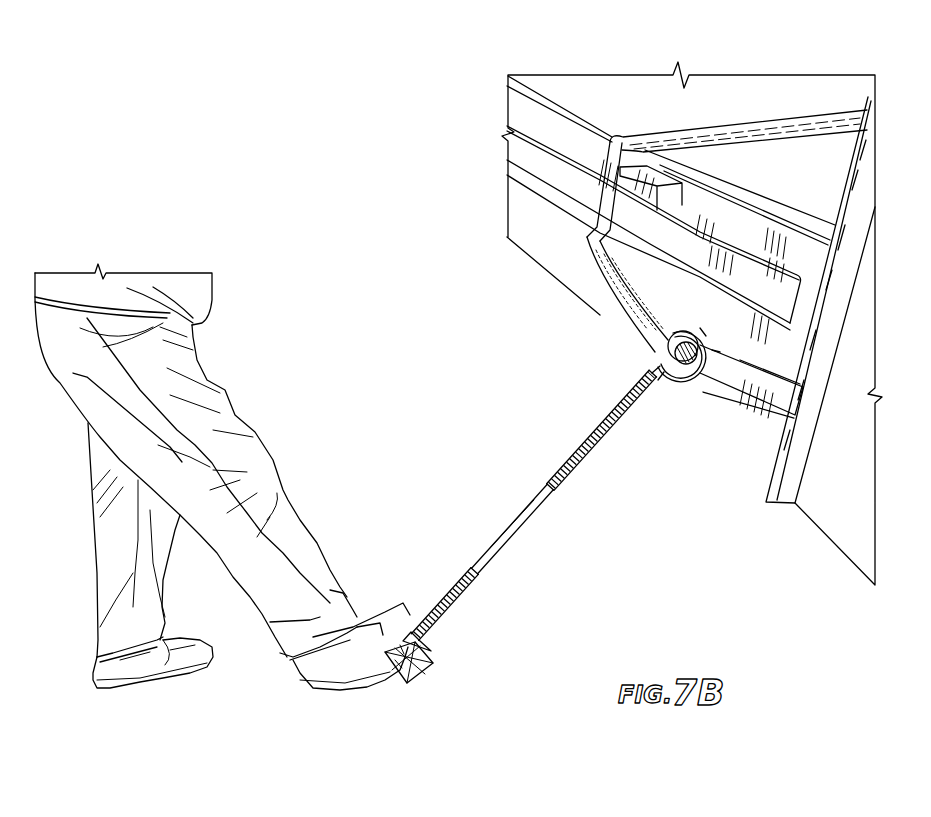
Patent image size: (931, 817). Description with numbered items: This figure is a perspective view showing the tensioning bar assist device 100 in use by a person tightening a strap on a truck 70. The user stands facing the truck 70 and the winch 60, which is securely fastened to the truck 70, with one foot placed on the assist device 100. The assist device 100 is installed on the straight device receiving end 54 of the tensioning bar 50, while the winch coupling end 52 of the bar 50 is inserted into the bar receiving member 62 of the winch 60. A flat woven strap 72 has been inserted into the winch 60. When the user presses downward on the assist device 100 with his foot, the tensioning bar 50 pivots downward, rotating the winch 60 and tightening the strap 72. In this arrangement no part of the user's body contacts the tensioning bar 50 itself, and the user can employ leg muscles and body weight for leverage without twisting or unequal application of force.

The truck 70 is at (620, 88).
The flat woven strap 72 is at (591, 279).
The bar receiving member 62 is at (706, 372).
The winch 60 is at (711, 366).
The tensioning bar assist device 100 is at (428, 687).
The tensioning bar 50 is at (508, 531).
The winch coupling end 52 is at (675, 392).
The straight device receiving end 54 is at (419, 656).